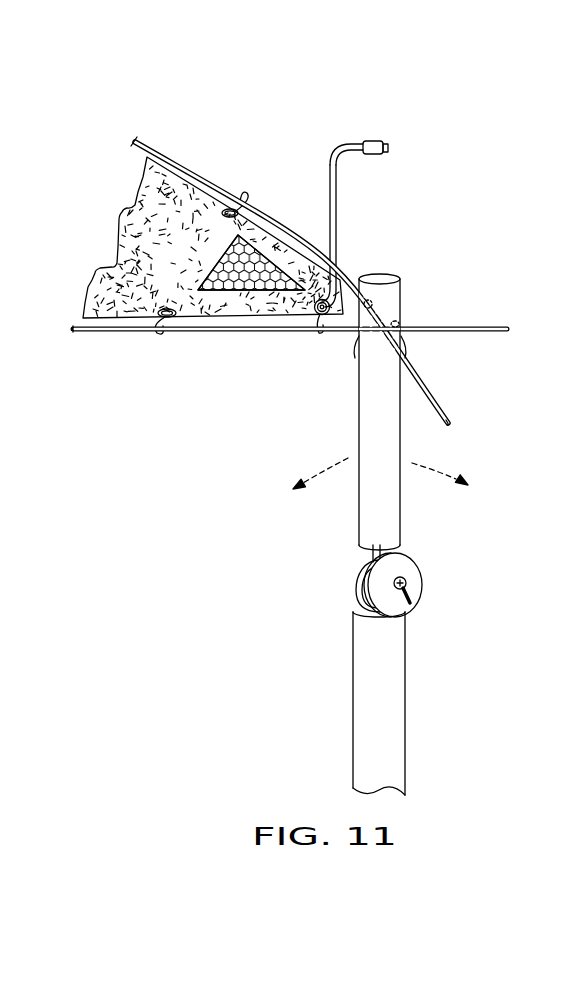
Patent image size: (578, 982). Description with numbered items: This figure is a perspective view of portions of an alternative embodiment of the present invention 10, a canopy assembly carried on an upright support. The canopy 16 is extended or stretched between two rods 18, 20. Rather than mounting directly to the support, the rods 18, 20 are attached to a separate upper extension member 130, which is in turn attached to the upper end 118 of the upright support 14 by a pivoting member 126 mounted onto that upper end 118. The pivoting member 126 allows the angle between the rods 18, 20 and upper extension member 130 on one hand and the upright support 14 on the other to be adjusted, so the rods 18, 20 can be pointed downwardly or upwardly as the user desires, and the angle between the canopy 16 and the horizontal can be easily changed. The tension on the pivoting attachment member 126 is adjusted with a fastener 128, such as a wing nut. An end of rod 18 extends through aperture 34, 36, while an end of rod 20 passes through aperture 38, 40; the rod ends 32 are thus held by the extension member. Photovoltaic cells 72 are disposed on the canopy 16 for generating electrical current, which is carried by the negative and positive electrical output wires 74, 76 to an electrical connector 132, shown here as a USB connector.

The present invention 10 is at (253, 112).
The upright support 14 is at (385, 703).
The canopy 16 is at (159, 262).
The rod 18 is at (179, 160).
The rod 20 is at (125, 328).
The rod ends 32 is at (507, 329).
The aperture 34 is at (371, 302).
The aperture 36 is at (401, 338).
The aperture 38 is at (359, 333).
The aperture 40 is at (398, 320).
The photovoltaic cells 72 is at (243, 282).
The electrical output wire 74 is at (336, 225).
The electrical output wire 76 is at (338, 194).
The upper end of the upright support 118 is at (395, 644).
The pivoting member 126 is at (412, 566).
The fastener 128 is at (408, 580).
The upper extension member 130 is at (370, 423).
The electrical connector 132 is at (371, 141).